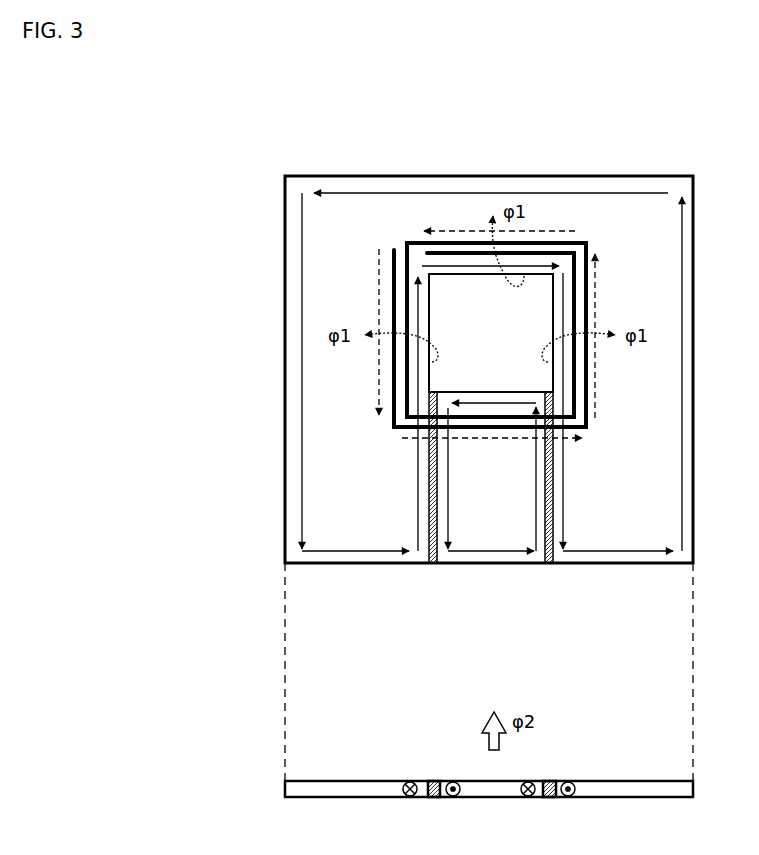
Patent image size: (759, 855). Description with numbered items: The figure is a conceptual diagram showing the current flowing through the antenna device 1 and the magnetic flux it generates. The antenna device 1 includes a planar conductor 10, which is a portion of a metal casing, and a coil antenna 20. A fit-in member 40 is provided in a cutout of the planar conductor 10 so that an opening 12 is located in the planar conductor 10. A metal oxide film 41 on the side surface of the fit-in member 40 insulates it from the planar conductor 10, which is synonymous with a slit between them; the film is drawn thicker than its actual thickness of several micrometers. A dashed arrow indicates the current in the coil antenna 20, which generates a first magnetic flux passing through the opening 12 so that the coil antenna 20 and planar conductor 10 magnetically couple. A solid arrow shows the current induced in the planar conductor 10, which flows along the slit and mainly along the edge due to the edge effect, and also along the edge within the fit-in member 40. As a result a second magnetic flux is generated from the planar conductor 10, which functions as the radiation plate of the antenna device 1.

The antenna device 1 is at (235, 120).
The planar conductor 10 is at (302, 186).
The opening 12 is at (503, 348).
The coil antenna 20 is at (401, 230).
The fit-in member 40 is at (485, 559).
The metal oxide film 41 is at (431, 561).